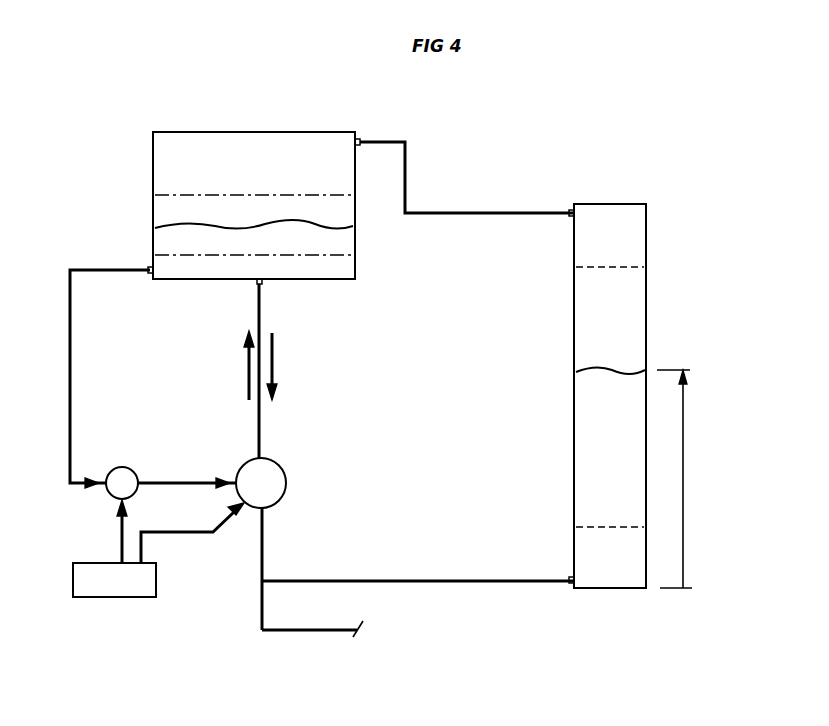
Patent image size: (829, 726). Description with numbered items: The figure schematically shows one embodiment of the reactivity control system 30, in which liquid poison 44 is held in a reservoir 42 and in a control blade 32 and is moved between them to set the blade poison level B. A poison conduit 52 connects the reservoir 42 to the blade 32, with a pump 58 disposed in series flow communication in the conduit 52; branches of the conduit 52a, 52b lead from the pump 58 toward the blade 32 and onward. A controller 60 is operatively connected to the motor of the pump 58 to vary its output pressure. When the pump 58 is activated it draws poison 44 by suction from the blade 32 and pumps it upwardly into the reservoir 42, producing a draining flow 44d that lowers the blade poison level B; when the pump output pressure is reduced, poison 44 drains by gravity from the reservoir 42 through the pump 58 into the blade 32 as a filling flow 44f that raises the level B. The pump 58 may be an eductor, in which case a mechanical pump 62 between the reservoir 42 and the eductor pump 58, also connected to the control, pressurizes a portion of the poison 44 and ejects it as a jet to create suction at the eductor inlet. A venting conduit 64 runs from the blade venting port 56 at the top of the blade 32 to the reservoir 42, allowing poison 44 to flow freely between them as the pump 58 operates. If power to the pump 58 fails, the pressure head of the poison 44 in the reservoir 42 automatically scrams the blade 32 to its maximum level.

The reactivity control system 30 is at (664, 182).
The control blade 32 is at (649, 274).
The reservoir 42 is at (153, 150).
The poison 44 is at (340, 243).
The filling flow 44f is at (249, 371).
The draining flow 44d is at (272, 366).
The poison conduit 52 is at (262, 314).
The poison conduit branch 52a is at (322, 579).
The poison conduit branch 52b is at (314, 634).
The venting port 56 is at (572, 208).
The pump 58 is at (283, 464).
The controller 60 is at (112, 598).
The mechanical pump 62 is at (126, 466).
The venting conduit 64 is at (405, 172).
The blade poison level B is at (681, 454).